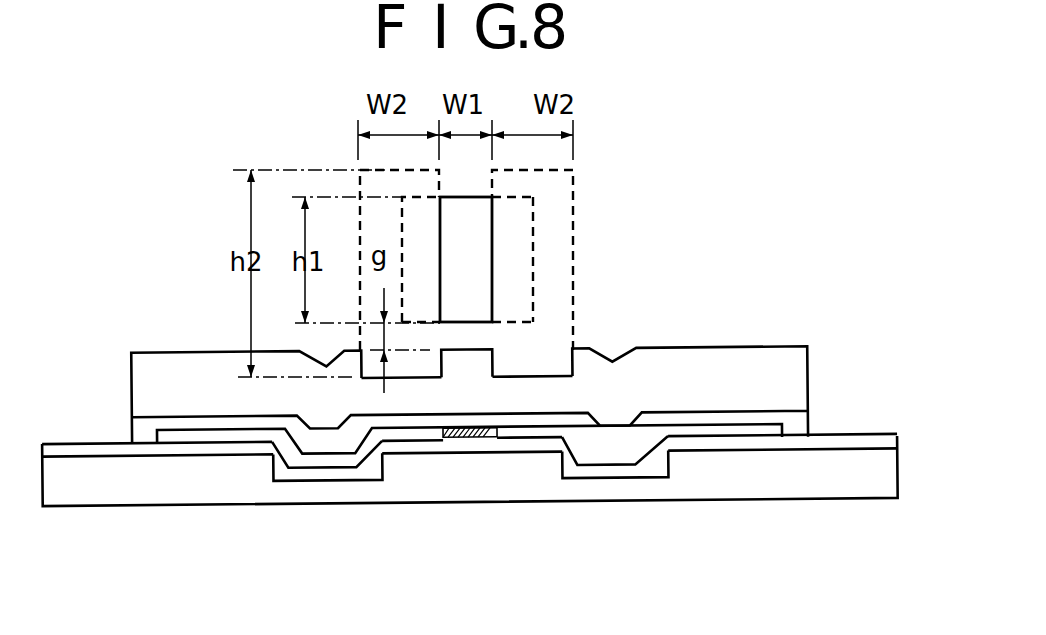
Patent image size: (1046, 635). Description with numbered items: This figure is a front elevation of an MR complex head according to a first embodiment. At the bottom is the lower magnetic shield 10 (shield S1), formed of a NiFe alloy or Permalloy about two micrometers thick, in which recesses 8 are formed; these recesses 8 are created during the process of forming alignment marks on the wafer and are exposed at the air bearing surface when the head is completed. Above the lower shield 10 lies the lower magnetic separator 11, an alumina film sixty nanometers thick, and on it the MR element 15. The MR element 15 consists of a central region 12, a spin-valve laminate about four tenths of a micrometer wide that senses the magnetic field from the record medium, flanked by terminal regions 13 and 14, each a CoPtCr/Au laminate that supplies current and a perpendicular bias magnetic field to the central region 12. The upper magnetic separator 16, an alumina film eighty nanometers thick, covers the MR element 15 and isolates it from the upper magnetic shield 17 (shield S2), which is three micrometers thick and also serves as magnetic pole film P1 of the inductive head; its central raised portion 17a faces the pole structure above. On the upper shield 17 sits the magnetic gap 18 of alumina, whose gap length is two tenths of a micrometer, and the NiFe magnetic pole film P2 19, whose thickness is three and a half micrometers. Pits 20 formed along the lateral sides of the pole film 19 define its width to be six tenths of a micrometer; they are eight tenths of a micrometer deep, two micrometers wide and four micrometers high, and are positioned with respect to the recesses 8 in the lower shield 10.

The recess 8 is at (281, 482).
The lower magnetic shield 10 is at (853, 477).
The lower magnetic separator 11 is at (857, 447).
The central region 12 is at (477, 437).
The terminal region 13 is at (360, 468).
The terminal region 14 is at (628, 467).
The MR element 15 is at (358, 537).
The upper magnetic separator 16 is at (797, 422).
The upper magnetic shield 17 is at (772, 372).
The projection of gate electrode layer 17a is at (472, 338).
The magnetic gap 18 is at (477, 364).
The magnetic pole film P2 19 is at (467, 265).
The pit 20 is at (383, 168).